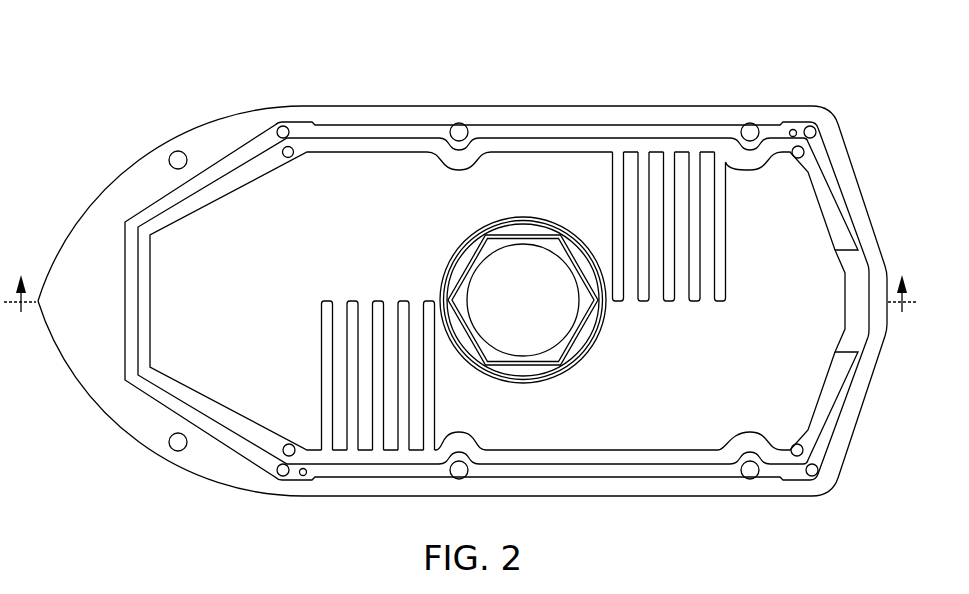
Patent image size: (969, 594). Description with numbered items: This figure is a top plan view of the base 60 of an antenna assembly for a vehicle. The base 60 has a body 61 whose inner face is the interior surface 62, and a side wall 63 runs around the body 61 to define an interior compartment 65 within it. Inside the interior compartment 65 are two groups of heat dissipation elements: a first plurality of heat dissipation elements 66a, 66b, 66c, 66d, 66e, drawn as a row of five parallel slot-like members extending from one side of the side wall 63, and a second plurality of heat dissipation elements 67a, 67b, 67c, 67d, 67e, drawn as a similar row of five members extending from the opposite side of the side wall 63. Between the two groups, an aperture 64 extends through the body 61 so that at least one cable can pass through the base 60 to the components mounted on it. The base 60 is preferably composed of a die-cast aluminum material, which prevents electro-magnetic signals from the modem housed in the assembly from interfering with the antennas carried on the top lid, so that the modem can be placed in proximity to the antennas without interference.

The base 60 is at (753, 71).
The body 61 is at (113, 190).
The interior surface 62 is at (114, 427).
The side wall 63 is at (357, 470).
The aperture 64 is at (523, 252).
The interior compartment 65 is at (353, 158).
The heat dissipation element 66a is at (328, 300).
The heat dissipation element 66b is at (352, 300).
The heat dissipation element 66c is at (378, 300).
The heat dissipation element 66d is at (404, 300).
The heat dissipation element 66e is at (425, 300).
The heat dissipation element 67a is at (620, 302).
The heat dissipation element 67b is at (644, 302).
The heat dissipation element 67c is at (669, 302).
The heat dissipation element 67d is at (696, 302).
The heat dissipation element 67e is at (726, 294).